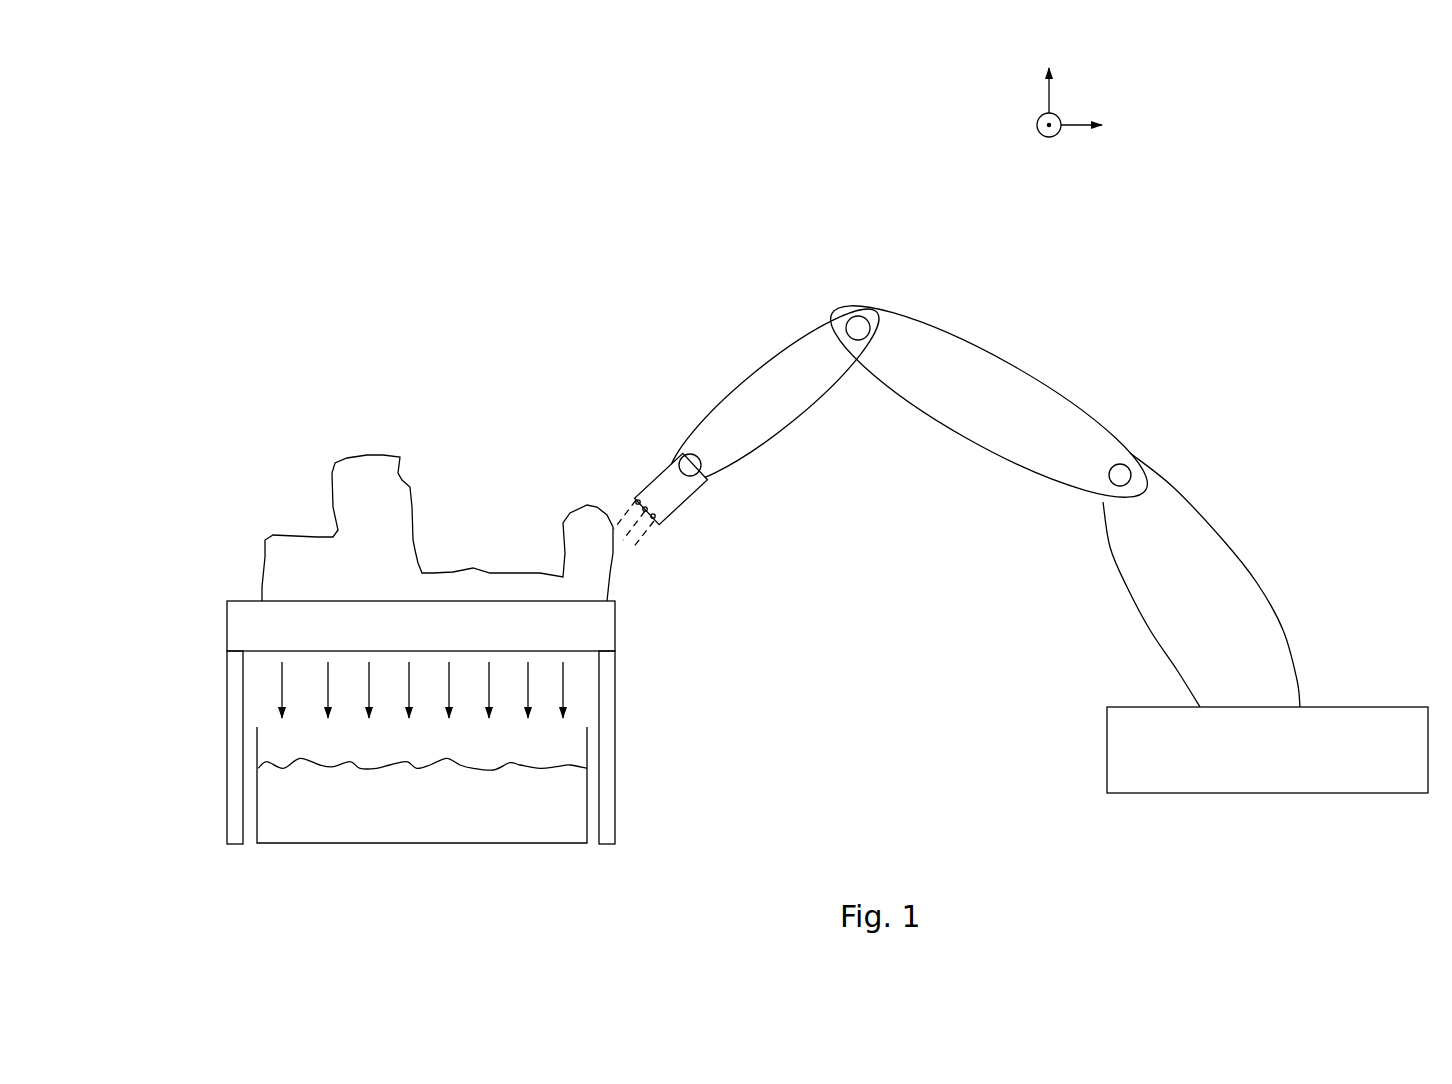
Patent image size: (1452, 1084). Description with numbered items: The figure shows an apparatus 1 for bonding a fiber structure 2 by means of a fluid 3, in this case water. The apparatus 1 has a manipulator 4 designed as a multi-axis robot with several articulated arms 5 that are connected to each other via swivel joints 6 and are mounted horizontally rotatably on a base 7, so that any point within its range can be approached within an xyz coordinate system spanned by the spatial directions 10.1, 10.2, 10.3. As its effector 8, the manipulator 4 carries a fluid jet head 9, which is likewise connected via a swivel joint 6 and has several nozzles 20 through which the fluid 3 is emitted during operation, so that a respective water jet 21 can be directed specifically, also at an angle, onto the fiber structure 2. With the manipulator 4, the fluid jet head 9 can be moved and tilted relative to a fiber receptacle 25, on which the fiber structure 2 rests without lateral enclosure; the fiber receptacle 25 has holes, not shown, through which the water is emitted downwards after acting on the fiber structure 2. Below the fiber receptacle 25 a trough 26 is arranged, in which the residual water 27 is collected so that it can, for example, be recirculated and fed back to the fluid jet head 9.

The apparatus 1 is at (1157, 290).
The fiber structure 2 is at (388, 504).
The fluid 3 is at (681, 600).
The water jet 21 is at (635, 553).
The manipulator 4 is at (987, 532).
The articulated arms 5 is at (933, 378).
The swivel joints 6 is at (692, 462).
The base 7 is at (1340, 762).
The effector 8 is at (661, 461).
The fluid jet head 9 is at (673, 489).
The nozzles 20 is at (623, 495).
The spatial direction 10.1 is at (1078, 130).
The spatial direction 10.2 is at (1045, 98).
The spatial direction 10.3 is at (1035, 132).
The fiber receptacle 25 is at (246, 622).
The trough 26 is at (257, 797).
The residual water 27 is at (437, 812).